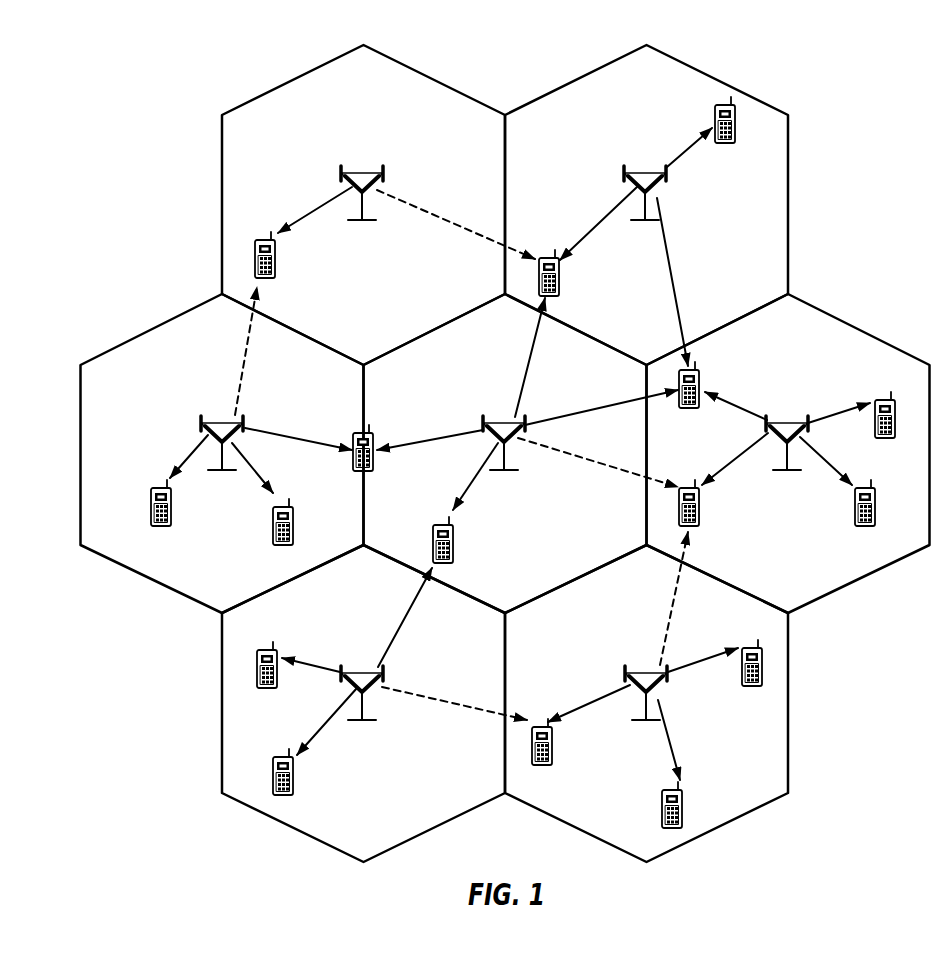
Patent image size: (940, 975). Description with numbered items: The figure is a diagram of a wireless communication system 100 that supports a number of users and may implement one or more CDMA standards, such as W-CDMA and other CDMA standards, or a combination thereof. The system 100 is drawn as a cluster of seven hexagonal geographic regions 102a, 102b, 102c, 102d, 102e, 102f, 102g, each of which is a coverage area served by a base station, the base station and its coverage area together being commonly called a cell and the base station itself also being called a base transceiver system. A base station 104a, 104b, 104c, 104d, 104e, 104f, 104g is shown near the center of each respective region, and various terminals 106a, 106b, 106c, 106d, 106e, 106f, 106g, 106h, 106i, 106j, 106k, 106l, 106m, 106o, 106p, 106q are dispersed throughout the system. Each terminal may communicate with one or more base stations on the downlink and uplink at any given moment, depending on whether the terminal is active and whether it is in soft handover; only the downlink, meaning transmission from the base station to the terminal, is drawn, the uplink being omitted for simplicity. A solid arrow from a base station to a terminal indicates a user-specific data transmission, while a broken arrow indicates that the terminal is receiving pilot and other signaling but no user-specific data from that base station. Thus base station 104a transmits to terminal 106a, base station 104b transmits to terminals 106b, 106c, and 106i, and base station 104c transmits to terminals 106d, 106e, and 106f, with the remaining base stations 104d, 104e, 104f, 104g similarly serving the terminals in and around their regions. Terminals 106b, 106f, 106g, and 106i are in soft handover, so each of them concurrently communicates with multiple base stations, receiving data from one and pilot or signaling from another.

The wireless communication system 100 is at (870, 79).
The geographic region 102a is at (290, 80).
The geographic region 102b is at (730, 66).
The geographic region 102c is at (150, 330).
The geographic region 102d is at (527, 335).
The geographic region 102e is at (858, 328).
The geographic region 102f is at (222, 712).
The geographic region 102g is at (788, 708).
The base station 104a is at (357, 170).
The base station 104b is at (652, 157).
The base station 104c is at (222, 420).
The base station 104d is at (503, 420).
The base station 104e is at (795, 420).
The base station 104f is at (363, 670).
The base station 104g is at (648, 670).
The terminal 106a is at (262, 240).
The terminal 106b is at (550, 258).
The terminal 106c is at (714, 112).
The terminal 106d is at (150, 502).
The terminal 106e is at (278, 507).
The terminal 106f is at (352, 440).
The terminal 106g is at (437, 522).
The terminal 106h is at (683, 487).
The terminal 106i is at (700, 380).
The terminal 106j is at (883, 398).
The terminal 106k is at (867, 485).
The terminal 106l is at (260, 648).
The terminal 106m is at (278, 755).
The terminal 106o is at (550, 743).
The terminal 106p is at (662, 810).
The terminal 106q is at (765, 635).